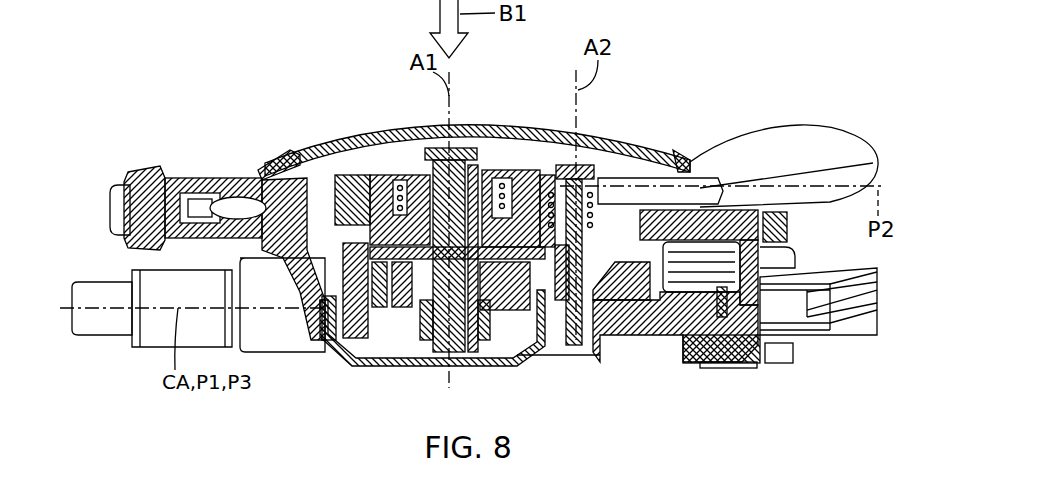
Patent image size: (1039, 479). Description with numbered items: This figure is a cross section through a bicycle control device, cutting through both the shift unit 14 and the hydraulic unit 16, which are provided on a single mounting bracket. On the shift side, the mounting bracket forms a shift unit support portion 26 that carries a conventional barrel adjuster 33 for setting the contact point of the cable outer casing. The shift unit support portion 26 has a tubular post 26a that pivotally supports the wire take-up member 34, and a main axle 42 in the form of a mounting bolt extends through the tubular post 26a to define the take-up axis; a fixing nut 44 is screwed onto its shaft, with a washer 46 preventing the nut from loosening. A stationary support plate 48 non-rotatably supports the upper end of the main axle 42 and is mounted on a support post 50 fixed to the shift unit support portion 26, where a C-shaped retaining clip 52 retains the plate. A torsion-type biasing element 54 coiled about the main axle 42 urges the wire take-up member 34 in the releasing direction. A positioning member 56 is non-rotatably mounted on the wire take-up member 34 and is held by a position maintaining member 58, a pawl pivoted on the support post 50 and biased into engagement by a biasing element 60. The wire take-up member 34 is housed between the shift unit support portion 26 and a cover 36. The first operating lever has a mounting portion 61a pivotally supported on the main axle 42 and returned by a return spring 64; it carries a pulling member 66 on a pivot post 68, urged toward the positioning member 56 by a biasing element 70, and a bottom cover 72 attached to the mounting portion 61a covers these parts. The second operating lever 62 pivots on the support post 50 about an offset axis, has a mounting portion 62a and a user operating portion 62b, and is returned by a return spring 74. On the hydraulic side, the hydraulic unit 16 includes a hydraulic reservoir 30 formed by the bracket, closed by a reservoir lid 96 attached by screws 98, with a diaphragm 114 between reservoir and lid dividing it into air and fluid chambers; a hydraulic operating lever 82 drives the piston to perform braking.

The shift unit 14 is at (553, 86).
The hydraulic unit 16 is at (291, 360).
The shift unit support portion 26 is at (313, 263).
The tubular post 26a is at (485, 168).
The hydraulic reservoir 30 is at (626, 300).
The barrel adjuster 33 is at (150, 164).
The wire take-up member 34 is at (540, 170).
The cover 36 is at (382, 156).
The main axle 42 is at (466, 148).
The fixing nut 44 is at (471, 356).
The washer 46 is at (396, 323).
The stationary support plate 48 is at (530, 168).
The support post 50 is at (607, 172).
The C-shaped retaining clip 52 is at (590, 170).
The biasing element 54 is at (418, 175).
The positioning member 56 is at (340, 172).
The position maintaining member 58 is at (687, 167).
The biasing element 60 is at (540, 300).
The mounting portion 61a is at (320, 304).
The second operating lever 62 is at (759, 124).
The mounting portion 62a is at (617, 170).
The user operating portion 62b is at (828, 128).
The return spring 64 is at (533, 358).
The pulling member 66 is at (268, 162).
The pivot post 68 is at (350, 340).
The biasing element 70 is at (333, 257).
The bottom cover 72 is at (419, 364).
The return spring 74 is at (625, 200).
The hydraulic operating lever 82 is at (849, 340).
The reservoir lid 96 is at (758, 238).
The screws 98 is at (719, 334).
The diaphragm 114 is at (663, 304).